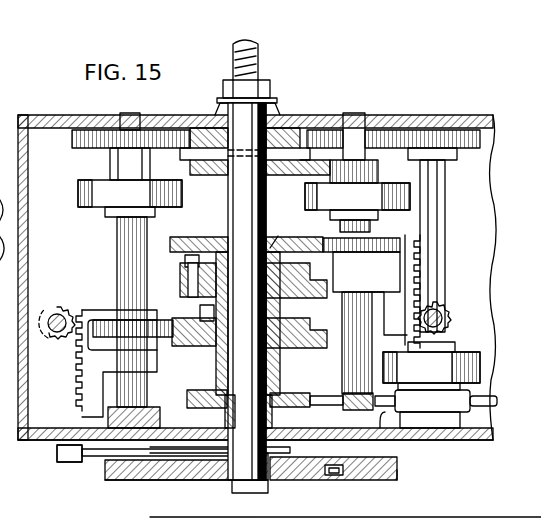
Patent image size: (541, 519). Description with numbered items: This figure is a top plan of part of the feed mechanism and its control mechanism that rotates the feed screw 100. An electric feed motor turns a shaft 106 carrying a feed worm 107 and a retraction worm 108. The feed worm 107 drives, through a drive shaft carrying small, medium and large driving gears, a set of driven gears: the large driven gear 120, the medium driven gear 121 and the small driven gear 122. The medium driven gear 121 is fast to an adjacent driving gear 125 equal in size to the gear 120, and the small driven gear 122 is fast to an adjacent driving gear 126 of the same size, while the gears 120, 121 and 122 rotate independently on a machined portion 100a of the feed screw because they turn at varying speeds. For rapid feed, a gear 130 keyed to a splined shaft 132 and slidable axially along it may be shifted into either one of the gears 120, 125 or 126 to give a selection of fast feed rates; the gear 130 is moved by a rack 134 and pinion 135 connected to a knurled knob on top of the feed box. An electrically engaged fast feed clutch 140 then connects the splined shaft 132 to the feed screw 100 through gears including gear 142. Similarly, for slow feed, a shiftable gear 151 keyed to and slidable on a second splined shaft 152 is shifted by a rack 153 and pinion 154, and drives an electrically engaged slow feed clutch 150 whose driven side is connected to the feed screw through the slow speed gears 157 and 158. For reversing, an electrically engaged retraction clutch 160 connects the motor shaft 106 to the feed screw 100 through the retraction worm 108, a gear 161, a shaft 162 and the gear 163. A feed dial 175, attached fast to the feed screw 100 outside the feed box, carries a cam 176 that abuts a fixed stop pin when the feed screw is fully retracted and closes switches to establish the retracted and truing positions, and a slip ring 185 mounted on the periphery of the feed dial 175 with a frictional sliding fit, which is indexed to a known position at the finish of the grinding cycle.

The feed screw 100 is at (235, 49).
The machined portion of the feed screw 100a is at (274, 248).
The shaft 106 is at (463, 411).
The feed worm 107 is at (296, 409).
The retraction worm 108 is at (452, 425).
The large driven gear 120 is at (196, 238).
The medium driven gear 121 is at (184, 263).
The small driven gear 122 is at (200, 313).
The driving gear 125 is at (172, 292).
The driving gear 126 is at (194, 343).
The gear 130 is at (122, 323).
The splined shaft 132 is at (117, 250).
The rack 134 is at (78, 363).
The pinion 135 is at (63, 311).
The fast feed clutch 140 is at (160, 195).
The gear 142 is at (72, 142).
The slow feed clutch 150 is at (382, 198).
The shiftable gear 151 is at (398, 246).
The splined shaft 152 is at (358, 305).
The rack 153 is at (410, 275).
The pinion 154 is at (440, 312).
The slow speed gear 157 is at (430, 127).
The slow speed gear 158 is at (311, 160).
The retraction clutch 160 is at (450, 367).
The gear 161 is at (416, 410).
The shaft 162 is at (442, 184).
The gear 163 is at (394, 127).
The feed dial 175 is at (193, 480).
The cam 176 is at (94, 458).
The slip ring 185 is at (395, 477).